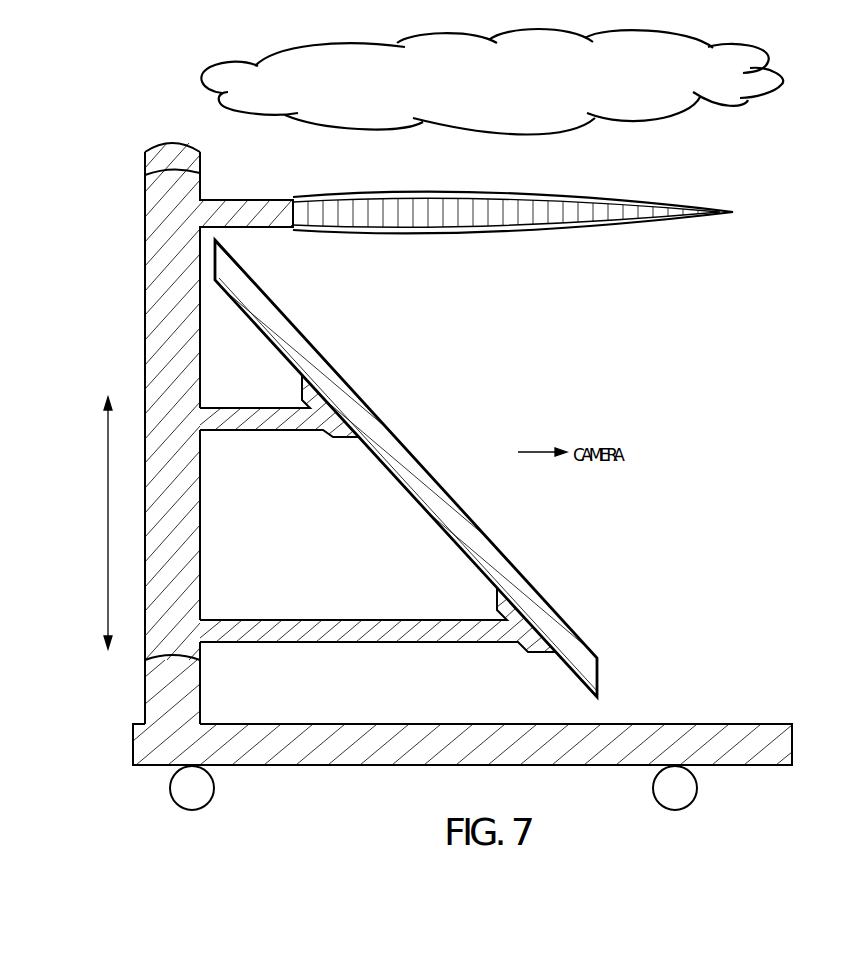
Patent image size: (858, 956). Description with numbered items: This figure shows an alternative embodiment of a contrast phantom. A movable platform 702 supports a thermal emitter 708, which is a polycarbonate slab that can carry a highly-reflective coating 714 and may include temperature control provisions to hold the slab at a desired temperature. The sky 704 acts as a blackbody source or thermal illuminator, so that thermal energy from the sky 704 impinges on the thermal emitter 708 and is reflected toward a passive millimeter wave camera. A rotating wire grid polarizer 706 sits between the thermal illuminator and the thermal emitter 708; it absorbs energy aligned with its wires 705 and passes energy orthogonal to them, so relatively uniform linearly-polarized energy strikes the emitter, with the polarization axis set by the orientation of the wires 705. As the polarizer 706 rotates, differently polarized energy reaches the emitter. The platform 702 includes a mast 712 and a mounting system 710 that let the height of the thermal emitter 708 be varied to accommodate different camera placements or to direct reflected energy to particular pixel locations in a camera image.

The movable platform 702 is at (793, 748).
The sky 704 is at (737, 100).
The wires 705 is at (523, 205).
The rotating wire grid polarizer 706 is at (627, 232).
The thermal emitter 708 is at (405, 445).
The mounting system 710 is at (145, 317).
The mast 712 is at (145, 686).
The highly-reflective coating 714 is at (412, 495).